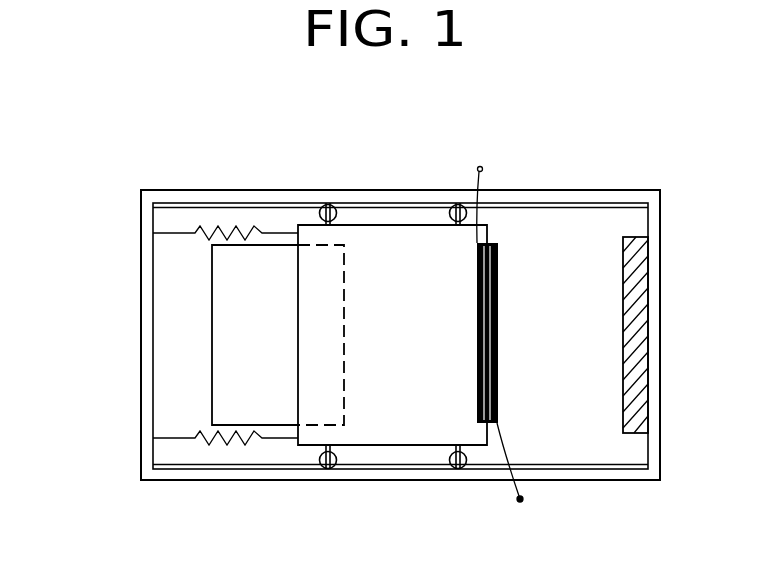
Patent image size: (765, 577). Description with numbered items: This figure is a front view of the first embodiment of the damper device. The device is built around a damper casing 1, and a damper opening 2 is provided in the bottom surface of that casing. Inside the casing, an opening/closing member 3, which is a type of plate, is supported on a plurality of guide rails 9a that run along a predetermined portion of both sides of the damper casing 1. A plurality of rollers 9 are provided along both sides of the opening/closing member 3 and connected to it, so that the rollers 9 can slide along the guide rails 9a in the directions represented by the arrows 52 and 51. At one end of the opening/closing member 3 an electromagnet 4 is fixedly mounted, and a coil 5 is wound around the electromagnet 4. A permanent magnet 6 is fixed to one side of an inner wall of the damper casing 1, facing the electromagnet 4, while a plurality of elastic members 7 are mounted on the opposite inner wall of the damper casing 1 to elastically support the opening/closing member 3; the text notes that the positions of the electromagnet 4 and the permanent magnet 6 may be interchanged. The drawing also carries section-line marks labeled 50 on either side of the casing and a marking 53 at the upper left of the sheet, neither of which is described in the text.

The damper casing 1 is at (179, 190).
The damper opening 2 is at (268, 245).
The opening/closing member 3 is at (360, 225).
The electromagnet 4 is at (502, 262).
The coil 5 is at (495, 258).
The permanent magnet 6 is at (637, 237).
The elastic members 7 is at (230, 229).
The rollers 9 is at (323, 205).
The guide rails 9a is at (576, 203).
The section line 50 is at (102, 300).
The arrow 51 is at (577, 313).
The arrow 52 is at (558, 313).
The sheet marking 53 is at (64, 54).